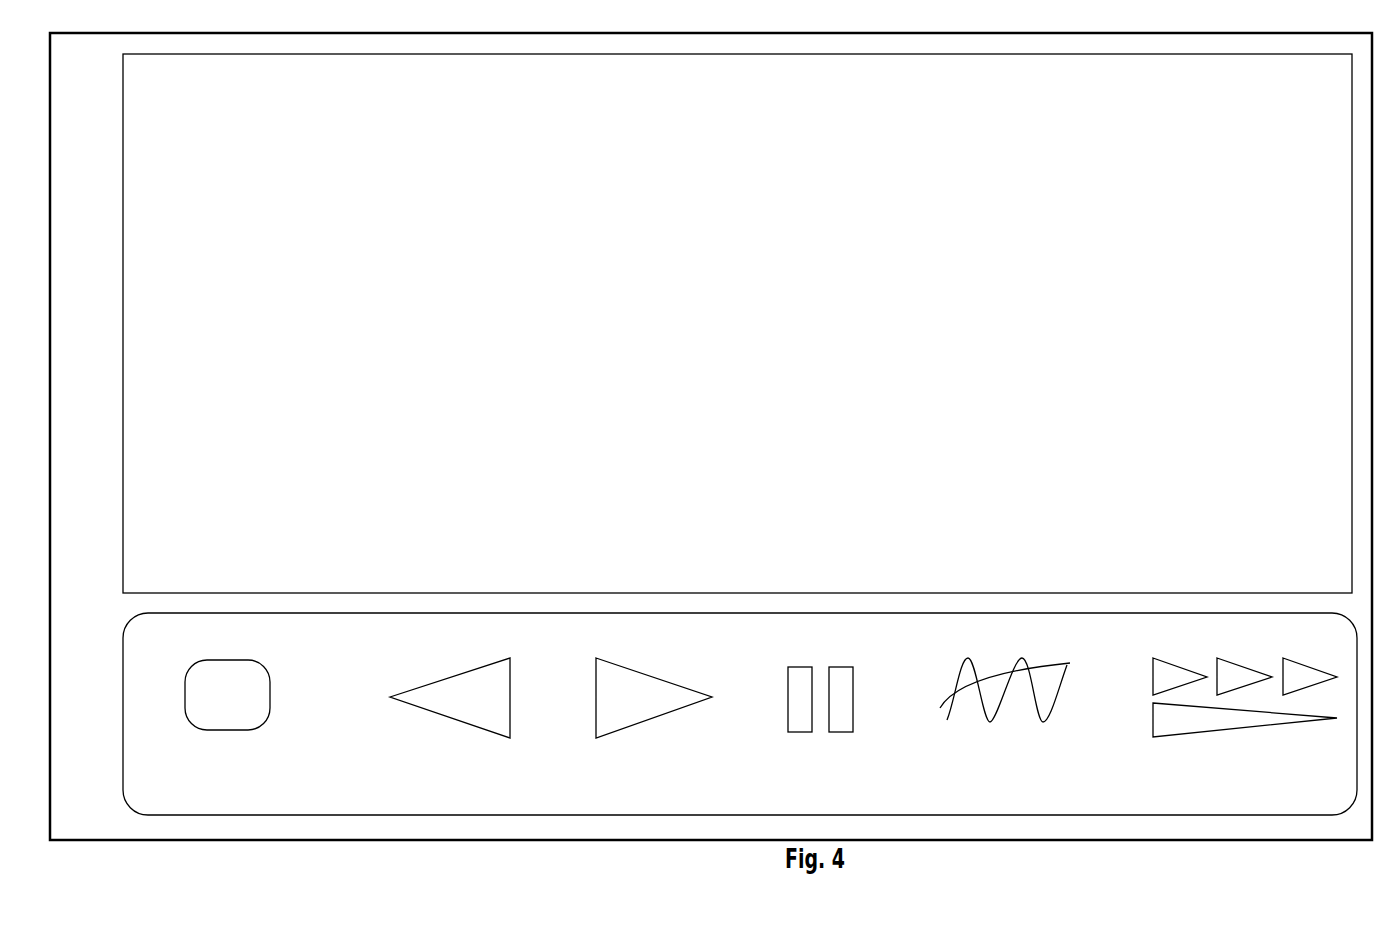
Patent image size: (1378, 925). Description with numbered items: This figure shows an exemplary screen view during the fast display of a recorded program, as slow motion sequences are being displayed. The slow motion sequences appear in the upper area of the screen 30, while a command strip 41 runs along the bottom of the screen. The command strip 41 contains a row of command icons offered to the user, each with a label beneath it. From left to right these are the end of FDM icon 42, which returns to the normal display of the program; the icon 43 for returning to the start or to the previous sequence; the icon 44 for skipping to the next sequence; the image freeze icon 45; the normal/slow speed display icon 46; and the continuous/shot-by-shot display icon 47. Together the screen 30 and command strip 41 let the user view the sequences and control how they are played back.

The screen 30 is at (737, 323).
The command strip 41 is at (121, 652).
The end of FDM command icon 42 is at (272, 677).
The return to start or previous sequence command icon 43 is at (463, 668).
The skip to next sequence command icon 44 is at (667, 678).
The image freeze command icon 45 is at (804, 716).
The normal/slow speed display command icon 46 is at (1022, 712).
The continuous/shot-by-shot display command icon 47 is at (1245, 711).